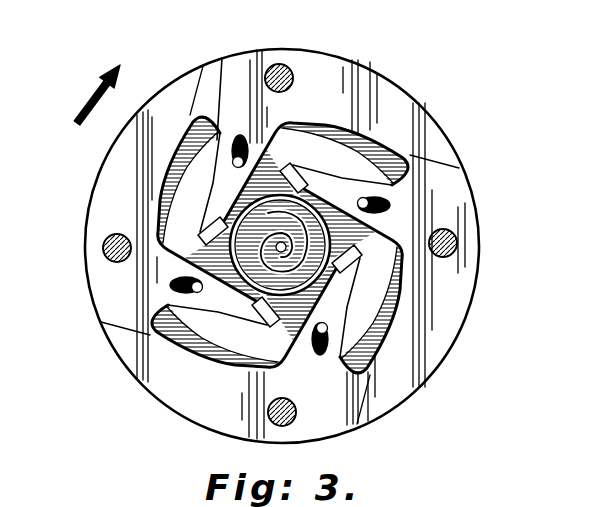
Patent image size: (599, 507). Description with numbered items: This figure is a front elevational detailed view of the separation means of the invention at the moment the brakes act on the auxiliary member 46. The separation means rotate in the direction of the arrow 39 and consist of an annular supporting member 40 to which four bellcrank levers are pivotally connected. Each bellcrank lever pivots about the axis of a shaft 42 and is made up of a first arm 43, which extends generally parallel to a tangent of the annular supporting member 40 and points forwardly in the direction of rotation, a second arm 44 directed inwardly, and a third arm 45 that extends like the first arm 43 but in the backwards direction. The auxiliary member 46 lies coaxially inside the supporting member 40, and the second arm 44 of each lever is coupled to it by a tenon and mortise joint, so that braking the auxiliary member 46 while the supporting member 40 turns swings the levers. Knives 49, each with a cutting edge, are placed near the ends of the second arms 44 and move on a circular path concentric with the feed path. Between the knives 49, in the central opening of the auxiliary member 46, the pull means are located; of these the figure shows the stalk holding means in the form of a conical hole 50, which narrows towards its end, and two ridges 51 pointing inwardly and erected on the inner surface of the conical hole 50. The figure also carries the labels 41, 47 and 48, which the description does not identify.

The arrow 39 is at (82, 95).
The annular supporting member 40 is at (360, 343).
The cylindrical housing 41 is at (490, 220).
The shaft 42 is at (287, 66).
The first arm 43 is at (390, 98).
The second arm 44 is at (233, 308).
The third arm 45 is at (432, 180).
The auxiliary member 46 is at (160, 213).
The blade guide slot 47 is at (222, 58).
The guide channel 48 is at (256, 50).
The knives 49 is at (303, 182).
The conical hole 50 is at (284, 292).
The ridges 51 is at (279, 216).